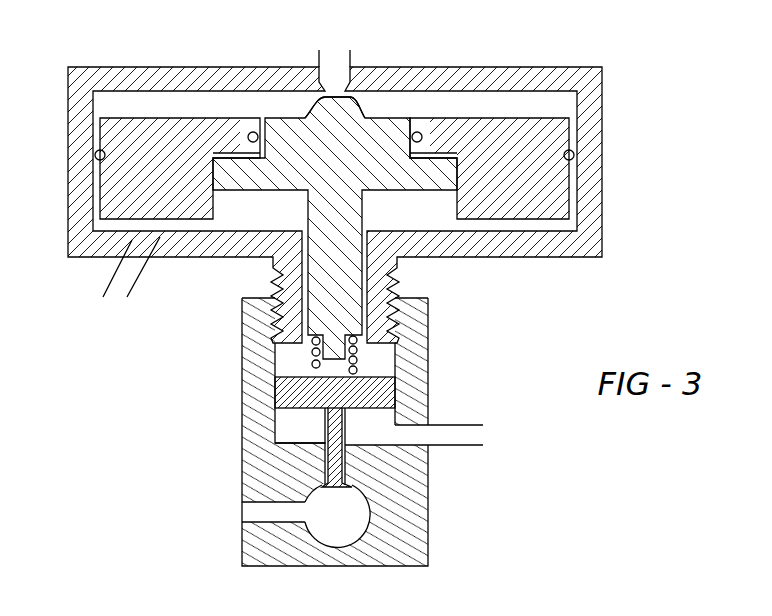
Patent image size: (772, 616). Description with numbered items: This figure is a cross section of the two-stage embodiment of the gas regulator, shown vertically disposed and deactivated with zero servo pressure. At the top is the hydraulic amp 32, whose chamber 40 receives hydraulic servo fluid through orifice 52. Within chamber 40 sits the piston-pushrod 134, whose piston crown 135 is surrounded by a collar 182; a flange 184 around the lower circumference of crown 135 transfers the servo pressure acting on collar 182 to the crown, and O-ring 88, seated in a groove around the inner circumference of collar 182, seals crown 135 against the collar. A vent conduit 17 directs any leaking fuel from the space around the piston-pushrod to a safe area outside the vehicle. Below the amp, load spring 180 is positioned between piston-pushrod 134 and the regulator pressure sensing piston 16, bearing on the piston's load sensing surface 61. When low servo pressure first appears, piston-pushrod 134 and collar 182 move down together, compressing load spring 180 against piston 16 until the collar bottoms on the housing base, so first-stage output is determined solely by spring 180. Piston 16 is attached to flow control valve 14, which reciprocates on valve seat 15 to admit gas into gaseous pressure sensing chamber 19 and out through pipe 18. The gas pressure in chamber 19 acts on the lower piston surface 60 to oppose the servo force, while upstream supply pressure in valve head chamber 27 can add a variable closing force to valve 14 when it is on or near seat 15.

The hydraulic amp 32 is at (168, 66).
The chamber 40 is at (488, 106).
The orifice 52 is at (328, 82).
The O-ring 88 is at (422, 135).
The piston crown 135 is at (304, 118).
The piston-pushrod 134 is at (338, 158).
The collar 182 is at (160, 175).
The flange 184 is at (237, 158).
The vent conduit 17 is at (115, 276).
The load spring 180 is at (312, 352).
The load sensing surface 61 is at (377, 377).
The pipe 18 is at (460, 423).
The regulator pressure sensing piston 16 is at (318, 392).
The gaseous pressure sensing chamber 19 is at (305, 428).
The flow control valve 14 is at (326, 484).
The lower piston surface 60 is at (373, 410).
The valve seat 15 is at (358, 473).
The valve head chamber 27 is at (348, 522).